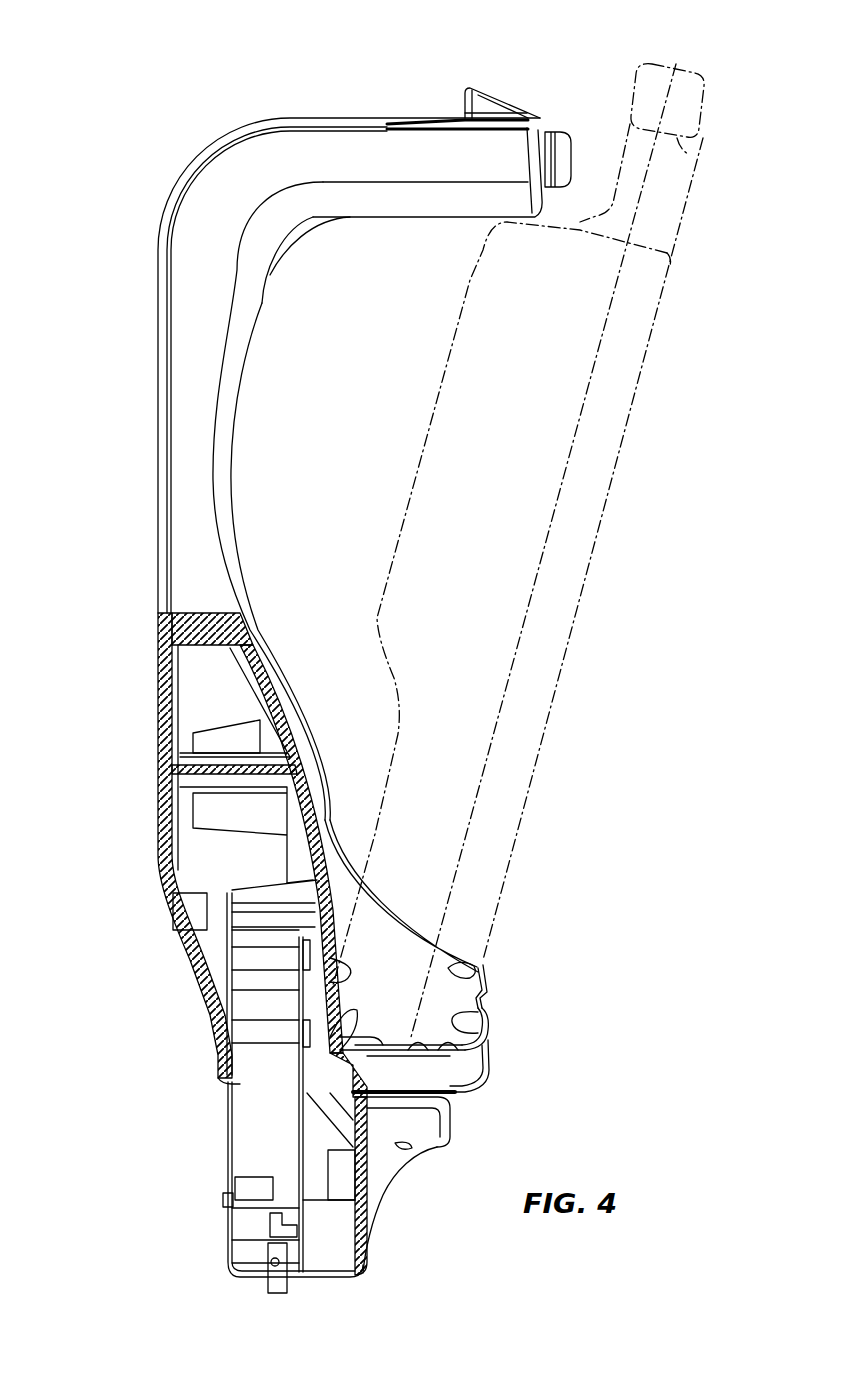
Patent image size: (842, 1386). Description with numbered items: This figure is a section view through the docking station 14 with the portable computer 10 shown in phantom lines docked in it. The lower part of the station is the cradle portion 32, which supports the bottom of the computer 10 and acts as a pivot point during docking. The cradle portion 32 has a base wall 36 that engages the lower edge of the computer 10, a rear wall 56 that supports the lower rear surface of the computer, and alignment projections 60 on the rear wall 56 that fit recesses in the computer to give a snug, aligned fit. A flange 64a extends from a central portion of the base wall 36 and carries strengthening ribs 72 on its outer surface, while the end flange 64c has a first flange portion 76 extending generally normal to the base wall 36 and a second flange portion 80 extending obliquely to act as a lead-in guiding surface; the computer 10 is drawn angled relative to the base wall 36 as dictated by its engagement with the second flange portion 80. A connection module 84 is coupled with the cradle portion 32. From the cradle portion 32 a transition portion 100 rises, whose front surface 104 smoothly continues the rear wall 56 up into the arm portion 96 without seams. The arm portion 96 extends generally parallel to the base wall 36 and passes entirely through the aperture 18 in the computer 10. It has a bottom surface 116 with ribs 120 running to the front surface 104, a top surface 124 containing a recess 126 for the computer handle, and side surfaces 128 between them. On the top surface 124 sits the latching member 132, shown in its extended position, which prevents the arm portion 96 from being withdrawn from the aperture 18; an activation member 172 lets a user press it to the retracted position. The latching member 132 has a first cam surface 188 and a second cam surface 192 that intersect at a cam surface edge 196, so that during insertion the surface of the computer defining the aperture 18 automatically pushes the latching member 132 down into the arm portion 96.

The portable computer 10 is at (650, 336).
The docking station 14 is at (126, 240).
The aperture 18 is at (695, 162).
The cradle portion 32 is at (409, 890).
The base wall 36 is at (488, 1062).
The rear wall 56 is at (343, 977).
The alignment projections 60 is at (372, 1037).
The flange 64a is at (483, 1030).
The flange 64c is at (487, 995).
The strengthening ribs 72 is at (478, 1080).
The first flange portion 76 is at (460, 1016).
The second flange portion 80 is at (462, 966).
The connection module 84 is at (372, 1208).
The arm portion 96 is at (465, 200).
The transition portion 100 is at (242, 383).
The front surface 104 is at (230, 490).
The bottom surface 116 is at (378, 217).
The ribs 120 is at (293, 237).
The top surface 124 is at (343, 117).
The recess 126 is at (407, 118).
The side surfaces 128 is at (443, 165).
The latching member 132 is at (470, 88).
The activation member 172 is at (570, 147).
The first cam surface 188 is at (503, 100).
The second cam surface 192 is at (482, 100).
The cam surface edge 196 is at (498, 98).